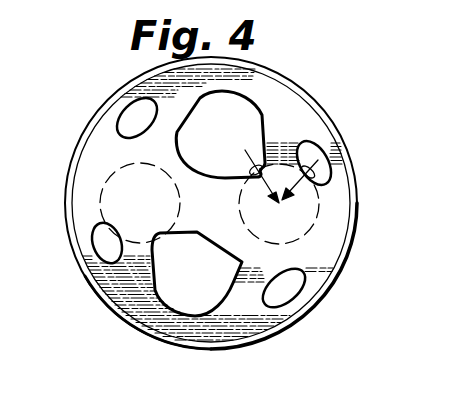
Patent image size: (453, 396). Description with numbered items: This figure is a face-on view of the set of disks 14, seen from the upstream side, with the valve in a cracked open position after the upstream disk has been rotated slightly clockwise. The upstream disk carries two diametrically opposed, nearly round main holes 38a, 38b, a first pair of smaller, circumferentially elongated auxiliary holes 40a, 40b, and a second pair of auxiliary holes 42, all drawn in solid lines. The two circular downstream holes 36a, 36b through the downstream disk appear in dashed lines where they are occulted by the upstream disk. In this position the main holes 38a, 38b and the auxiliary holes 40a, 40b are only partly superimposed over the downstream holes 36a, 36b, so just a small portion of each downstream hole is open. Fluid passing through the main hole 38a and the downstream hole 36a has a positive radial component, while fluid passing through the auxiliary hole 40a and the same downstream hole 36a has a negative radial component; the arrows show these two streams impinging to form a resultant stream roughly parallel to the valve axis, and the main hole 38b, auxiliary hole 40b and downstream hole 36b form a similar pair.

The set of disks 14 is at (331, 115).
The downstream hole 36a is at (320, 200).
The downstream hole 36b is at (100, 197).
The main hole 38a is at (258, 107).
The main hole 38b is at (207, 313).
The auxiliary hole 40a is at (322, 153).
The auxiliary hole 40b is at (95, 262).
The auxiliary holes 42 is at (126, 107).